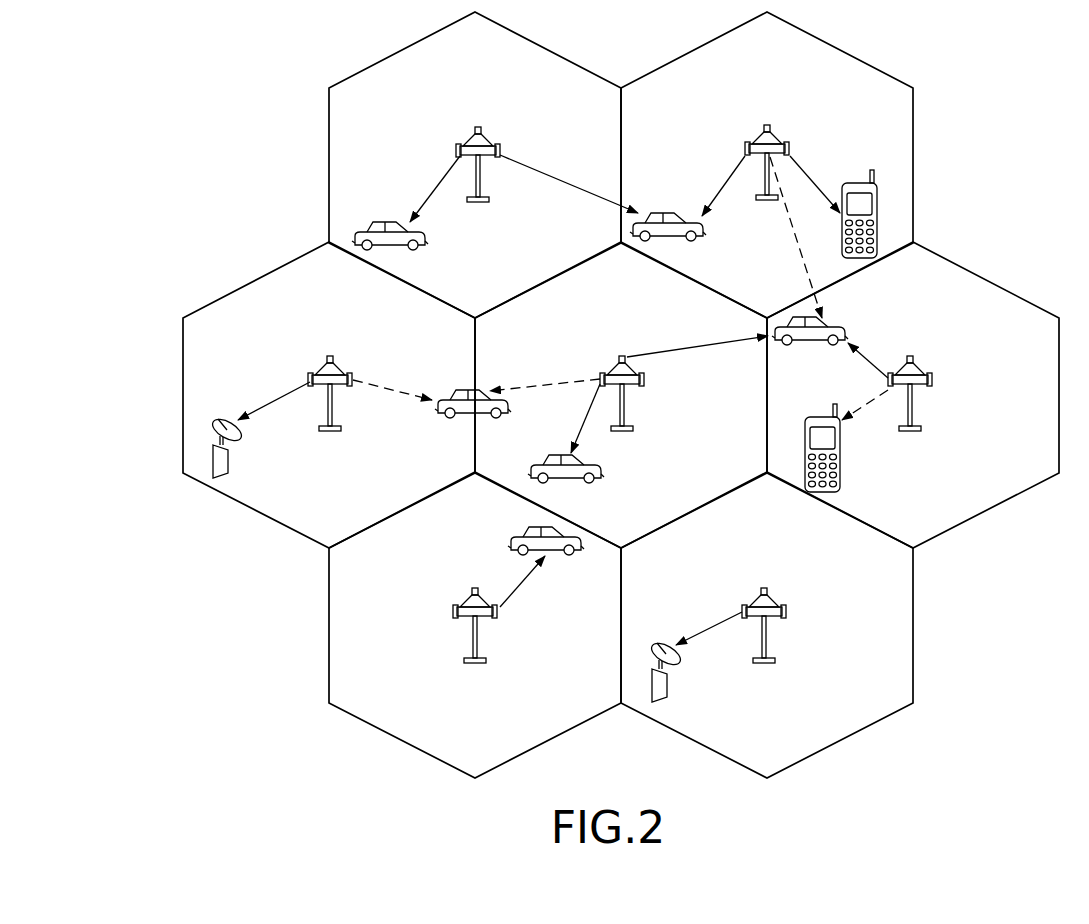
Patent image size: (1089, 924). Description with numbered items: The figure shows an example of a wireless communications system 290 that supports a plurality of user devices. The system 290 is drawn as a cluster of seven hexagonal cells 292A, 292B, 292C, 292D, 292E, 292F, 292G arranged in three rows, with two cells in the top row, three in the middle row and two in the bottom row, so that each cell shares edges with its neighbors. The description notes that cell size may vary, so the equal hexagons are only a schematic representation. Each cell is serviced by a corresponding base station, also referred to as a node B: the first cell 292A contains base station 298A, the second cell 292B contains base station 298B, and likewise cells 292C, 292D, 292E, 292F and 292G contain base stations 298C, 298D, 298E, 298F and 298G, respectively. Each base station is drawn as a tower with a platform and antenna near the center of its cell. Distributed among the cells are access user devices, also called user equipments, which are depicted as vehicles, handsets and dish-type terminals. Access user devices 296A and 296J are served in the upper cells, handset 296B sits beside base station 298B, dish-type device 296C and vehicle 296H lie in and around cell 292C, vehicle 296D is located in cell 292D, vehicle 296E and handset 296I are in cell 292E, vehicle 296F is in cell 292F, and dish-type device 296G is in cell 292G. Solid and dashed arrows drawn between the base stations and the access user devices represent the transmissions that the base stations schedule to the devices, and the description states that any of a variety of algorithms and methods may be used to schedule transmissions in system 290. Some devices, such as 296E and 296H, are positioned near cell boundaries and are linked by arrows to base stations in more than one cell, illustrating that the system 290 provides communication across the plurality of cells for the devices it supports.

The wireless communications system 290 is at (122, 93).
The cell 292A is at (451, 54).
The cell 292B is at (743, 54).
The cell 292C is at (306, 296).
The cell 292D is at (593, 296).
The cell 292E is at (888, 296).
The cell 292F is at (451, 516).
The cell 292G is at (743, 516).
The base station 298A is at (478, 127).
The base station 298B is at (767, 125).
The base station 298C is at (330, 356).
The base station 298D is at (621, 356).
The base station 298E is at (912, 356).
The base station 298F is at (475, 588).
The base station 298G is at (767, 588).
The access user device 296A is at (426, 240).
The access user device 296B is at (858, 183).
The access user device 296C is at (230, 462).
The access user device 296D is at (604, 478).
The access user device 296E is at (805, 341).
The access user device 296F is at (580, 555).
The access user device 296G is at (670, 690).
The access user device 296H is at (442, 416).
The access user device 296I is at (842, 476).
The access user device 296J is at (668, 214).